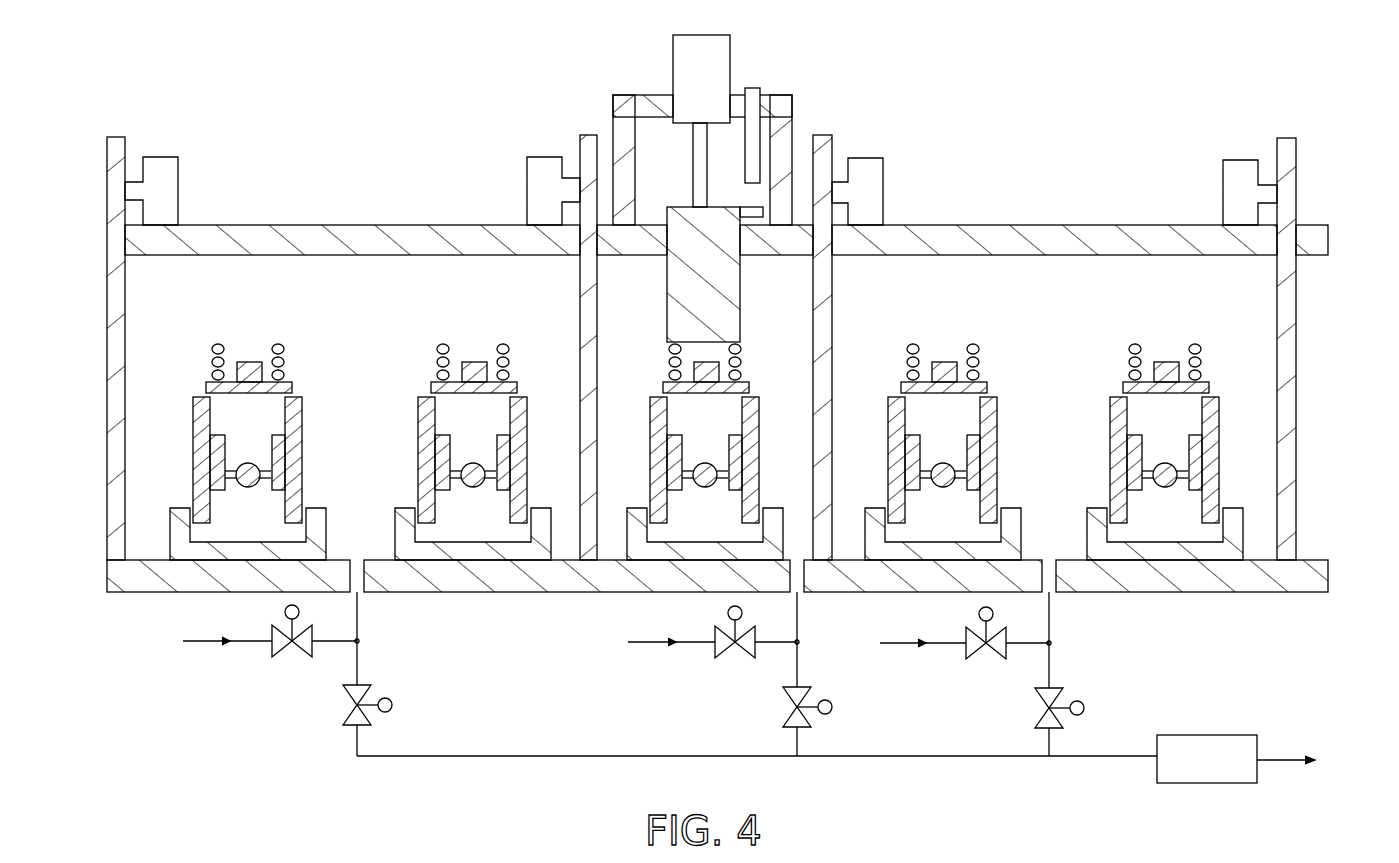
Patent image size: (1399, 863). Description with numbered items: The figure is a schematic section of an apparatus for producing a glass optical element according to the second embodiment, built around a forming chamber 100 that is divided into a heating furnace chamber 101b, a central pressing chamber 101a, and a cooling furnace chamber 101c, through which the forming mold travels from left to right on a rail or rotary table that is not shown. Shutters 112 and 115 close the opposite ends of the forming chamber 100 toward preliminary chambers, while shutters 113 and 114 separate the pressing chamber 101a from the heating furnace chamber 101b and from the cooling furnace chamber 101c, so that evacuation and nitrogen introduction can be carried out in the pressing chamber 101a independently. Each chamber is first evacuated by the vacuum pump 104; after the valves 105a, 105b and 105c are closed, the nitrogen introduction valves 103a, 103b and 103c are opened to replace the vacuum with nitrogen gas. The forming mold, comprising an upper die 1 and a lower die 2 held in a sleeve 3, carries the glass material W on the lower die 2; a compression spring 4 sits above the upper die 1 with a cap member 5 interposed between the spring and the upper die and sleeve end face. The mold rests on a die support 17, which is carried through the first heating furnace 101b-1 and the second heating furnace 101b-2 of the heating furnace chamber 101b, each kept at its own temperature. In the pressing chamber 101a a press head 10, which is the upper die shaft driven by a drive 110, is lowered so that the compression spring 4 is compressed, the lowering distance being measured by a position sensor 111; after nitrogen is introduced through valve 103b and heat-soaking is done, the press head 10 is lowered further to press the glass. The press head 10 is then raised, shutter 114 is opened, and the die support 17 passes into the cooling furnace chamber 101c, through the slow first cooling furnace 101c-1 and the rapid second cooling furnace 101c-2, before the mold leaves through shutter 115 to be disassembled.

The forming chamber 100 is at (1170, 118).
The drive motor 110 is at (733, 62).
The position sensor 111 is at (762, 92).
The press head 10 is at (674, 216).
The shutter 112 is at (127, 150).
The shutter 113 is at (579, 150).
The shutter 114 is at (833, 152).
The shutter 115 is at (1297, 157).
The pressing chamber 101a is at (790, 302).
The heating furnace chamber 101b is at (360, 272).
The cooling furnace chamber 101c is at (1070, 282).
The first heating furnace 101b-1 is at (217, 428).
The second heating furnace 101b-2 is at (478, 336).
The first cooling furnace 101c-1 is at (950, 336).
The second cooling furnace 101c-2 is at (1170, 336).
The compression spring 4 is at (208, 362).
The cap member 5 is at (205, 387).
The upper die 1 is at (200, 421).
The sleeve 3 is at (212, 455).
The glass material W is at (234, 475).
The lower die 2 is at (186, 516).
The die support 17 is at (190, 566).
The nitrogen introduction valve 103a is at (280, 656).
The nitrogen introduction valve 103b is at (724, 657).
The nitrogen introduction valve 103c is at (976, 658).
The valve 105a is at (344, 696).
The valve 105b is at (785, 697).
The valve 105c is at (1037, 698).
The vacuum pump 104 is at (1207, 736).